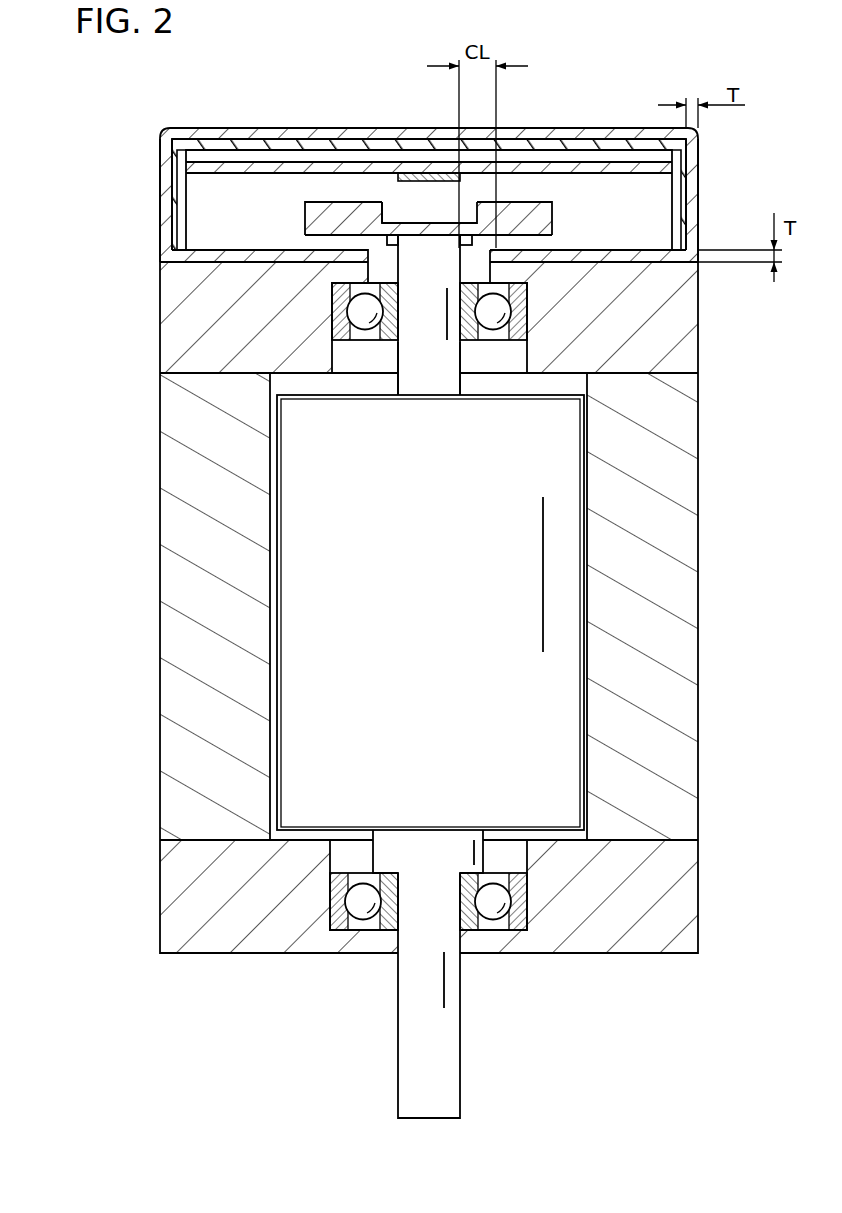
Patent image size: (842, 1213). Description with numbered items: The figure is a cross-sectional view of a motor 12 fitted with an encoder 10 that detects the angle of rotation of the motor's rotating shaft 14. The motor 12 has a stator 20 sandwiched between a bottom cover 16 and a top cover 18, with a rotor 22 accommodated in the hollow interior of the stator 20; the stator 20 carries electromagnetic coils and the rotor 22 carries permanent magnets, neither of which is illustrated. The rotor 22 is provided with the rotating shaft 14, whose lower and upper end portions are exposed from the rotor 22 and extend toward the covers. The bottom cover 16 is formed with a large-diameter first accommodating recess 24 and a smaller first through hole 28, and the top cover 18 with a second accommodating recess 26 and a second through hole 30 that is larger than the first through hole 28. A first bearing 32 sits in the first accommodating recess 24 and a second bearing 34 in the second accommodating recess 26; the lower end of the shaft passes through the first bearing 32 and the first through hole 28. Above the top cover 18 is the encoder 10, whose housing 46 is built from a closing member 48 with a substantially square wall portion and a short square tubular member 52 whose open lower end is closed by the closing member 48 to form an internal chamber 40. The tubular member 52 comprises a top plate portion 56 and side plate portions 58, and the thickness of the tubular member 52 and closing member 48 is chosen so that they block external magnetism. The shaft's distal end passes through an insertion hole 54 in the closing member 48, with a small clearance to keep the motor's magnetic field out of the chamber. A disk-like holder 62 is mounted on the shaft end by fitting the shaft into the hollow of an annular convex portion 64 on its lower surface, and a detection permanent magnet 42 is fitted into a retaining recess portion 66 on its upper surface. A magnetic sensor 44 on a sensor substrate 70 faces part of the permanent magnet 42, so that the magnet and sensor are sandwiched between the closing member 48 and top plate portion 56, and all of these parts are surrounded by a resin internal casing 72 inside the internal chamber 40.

The encoder 10 is at (707, 148).
The motor 12 is at (703, 433).
The rotating shaft 14 is at (413, 1037).
The bottom cover 16 is at (680, 890).
The top cover 18 is at (680, 318).
The stator 20 is at (680, 795).
The rotor 22 is at (537, 710).
The first accommodating recess 24 is at (332, 850).
The second accommodating recess 26 is at (333, 348).
The first through hole 28 is at (402, 943).
The second through hole 30 is at (372, 272).
The first bearing 32 is at (505, 932).
The second bearing 34 is at (413, 322).
The internal chamber 40 is at (250, 157).
The permanent magnet 42 is at (412, 210).
The magnetic sensor 44 is at (443, 177).
The housing 46 is at (76, 195).
The closing member 48 is at (172, 257).
The tubular member 52 is at (158, 213).
The insertion hole 54 is at (368, 245).
The top plate portion 56 is at (302, 137).
The side plate portions 58 is at (170, 180).
The holder 62 is at (540, 216).
The annular convex portion 64 is at (472, 240).
The retaining recess portion 66 is at (392, 207).
The sensor substrate 70 is at (365, 170).
The internal casing 72 is at (686, 210).